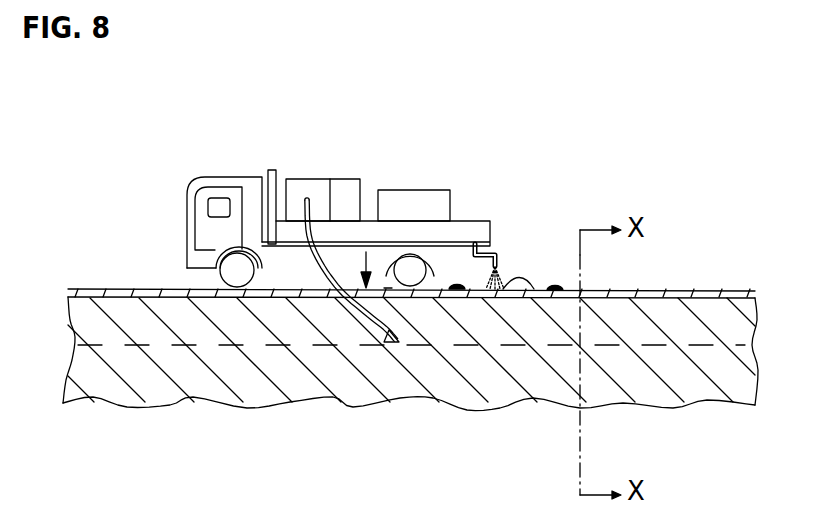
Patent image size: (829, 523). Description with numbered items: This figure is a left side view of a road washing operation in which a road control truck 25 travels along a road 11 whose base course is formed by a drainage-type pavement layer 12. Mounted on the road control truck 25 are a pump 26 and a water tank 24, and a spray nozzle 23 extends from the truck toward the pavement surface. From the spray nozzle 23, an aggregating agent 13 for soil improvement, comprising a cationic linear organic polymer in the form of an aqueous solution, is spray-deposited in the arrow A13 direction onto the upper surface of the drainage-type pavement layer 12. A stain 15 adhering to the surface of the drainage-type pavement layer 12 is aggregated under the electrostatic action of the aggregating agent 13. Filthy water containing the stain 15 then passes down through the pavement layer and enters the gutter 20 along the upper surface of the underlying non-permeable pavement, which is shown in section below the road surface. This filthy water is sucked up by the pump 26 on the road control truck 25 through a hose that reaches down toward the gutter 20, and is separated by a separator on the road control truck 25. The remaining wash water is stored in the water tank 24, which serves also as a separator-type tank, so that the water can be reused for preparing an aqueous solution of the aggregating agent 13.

The road 11 is at (703, 290).
The drainage-type pavement layer 12 is at (607, 298).
The aggregating agent 13 is at (535, 291).
The stain 15 is at (457, 288).
The gutter 20 is at (186, 345).
The spray nozzle 23 is at (498, 263).
The water tank 24 is at (366, 252).
The road control truck 25 is at (238, 178).
The pump 26 is at (308, 190).
The arrow A13 direction A13 is at (388, 288).